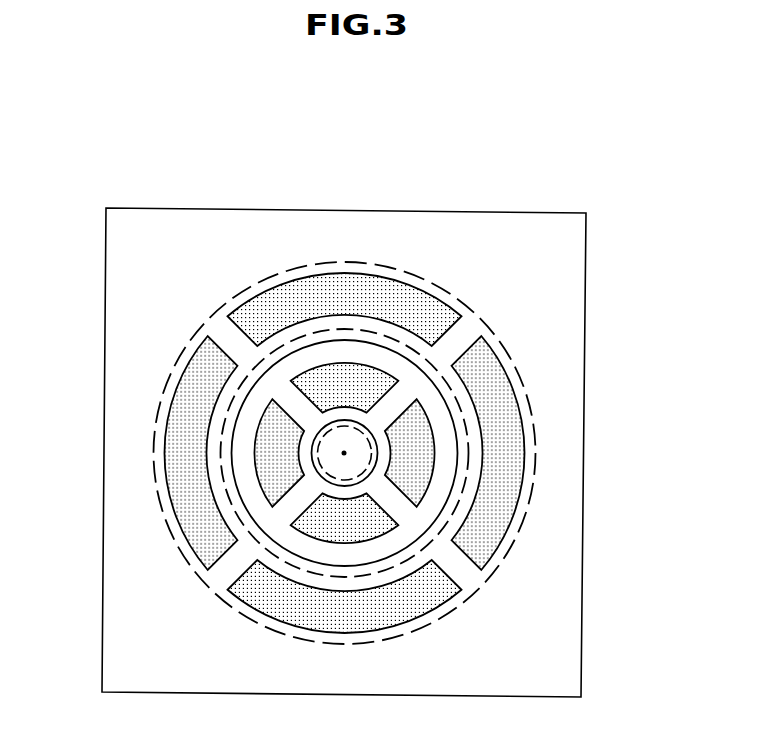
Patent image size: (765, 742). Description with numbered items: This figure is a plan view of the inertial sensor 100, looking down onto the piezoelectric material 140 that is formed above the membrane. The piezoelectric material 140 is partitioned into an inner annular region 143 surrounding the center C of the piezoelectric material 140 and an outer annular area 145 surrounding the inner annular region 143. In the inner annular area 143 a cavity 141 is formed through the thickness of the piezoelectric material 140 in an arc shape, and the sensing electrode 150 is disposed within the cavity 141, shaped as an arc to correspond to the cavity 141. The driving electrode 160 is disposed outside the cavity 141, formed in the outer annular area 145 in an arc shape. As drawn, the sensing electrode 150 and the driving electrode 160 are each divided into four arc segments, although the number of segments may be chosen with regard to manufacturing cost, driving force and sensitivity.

The inertial sensor 100 is at (197, 117).
The piezoelectric material 140 is at (545, 270).
The cavity 141 is at (307, 349).
The inner annular region 143 is at (394, 345).
The outer annular area 145 is at (346, 268).
The sensing electrode 150 is at (418, 438).
The driving electrode 160 is at (507, 458).
The center C is at (343, 453).